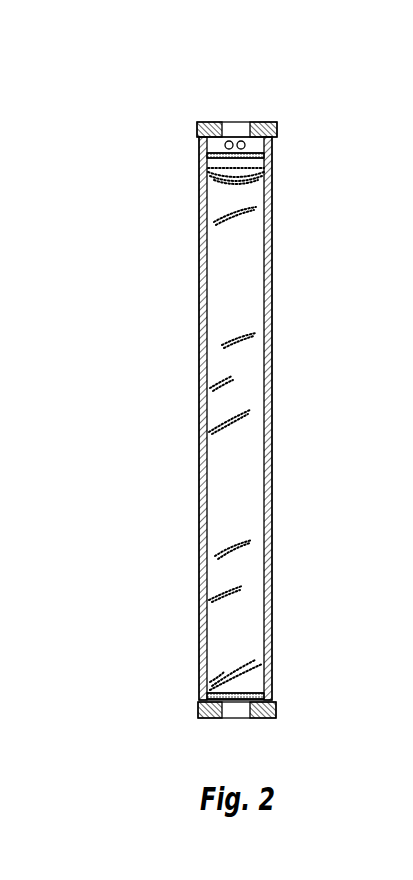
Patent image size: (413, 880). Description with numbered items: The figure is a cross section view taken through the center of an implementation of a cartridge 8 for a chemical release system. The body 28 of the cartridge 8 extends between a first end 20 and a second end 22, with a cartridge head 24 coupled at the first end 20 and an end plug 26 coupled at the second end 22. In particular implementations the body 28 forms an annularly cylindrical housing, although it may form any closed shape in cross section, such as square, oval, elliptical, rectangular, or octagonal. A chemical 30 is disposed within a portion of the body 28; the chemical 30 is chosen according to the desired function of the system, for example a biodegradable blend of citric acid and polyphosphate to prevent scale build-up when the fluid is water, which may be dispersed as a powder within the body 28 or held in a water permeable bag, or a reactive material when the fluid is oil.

The cartridge 8 is at (163, 118).
The first end 20 is at (268, 138).
The second end 22 is at (268, 693).
The cartridge head 24 is at (207, 125).
The end plug 26 is at (208, 712).
The body 28 is at (202, 227).
The chemical 30 is at (220, 462).